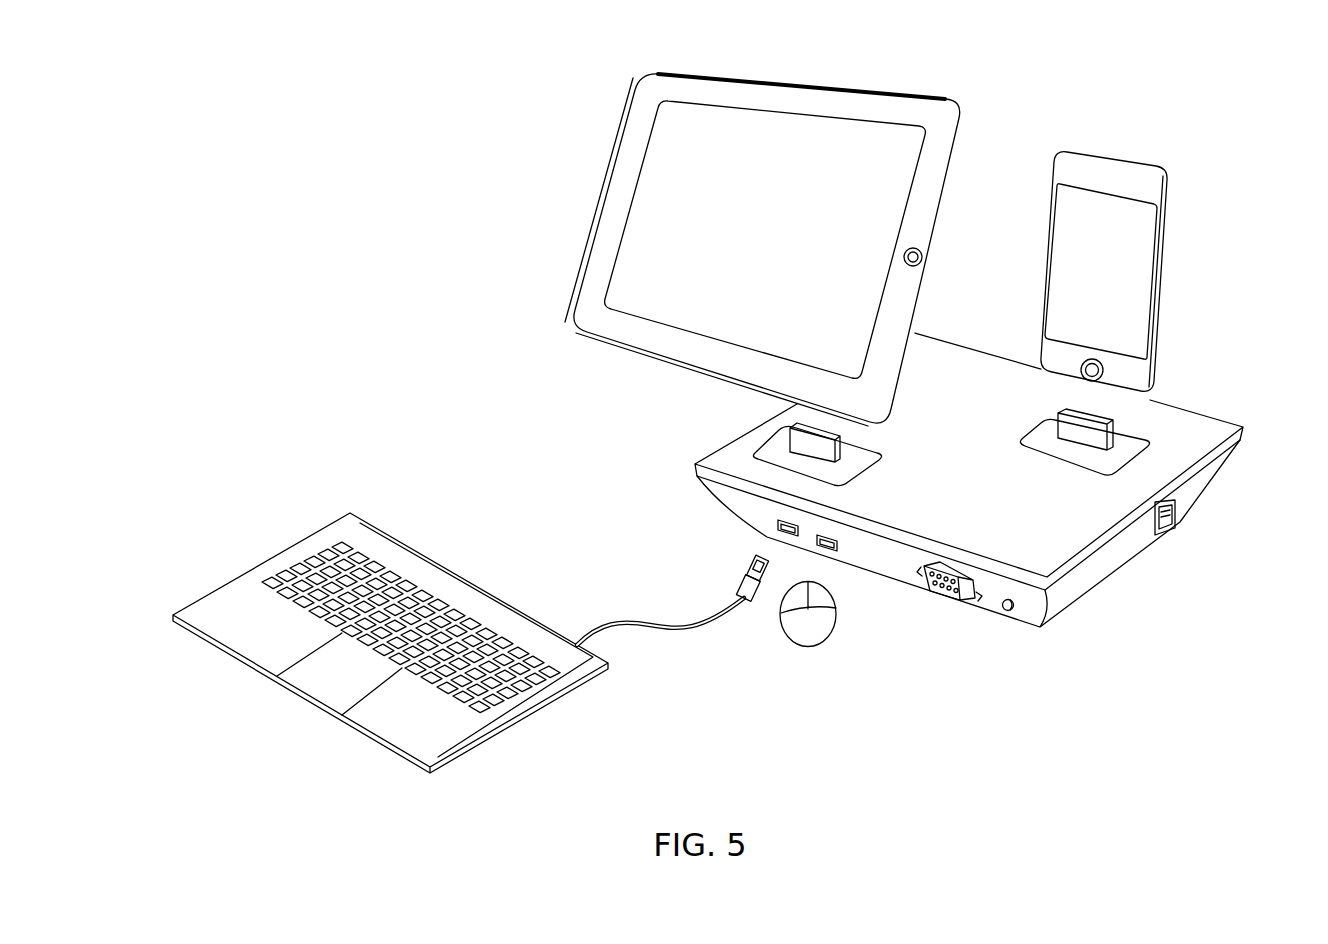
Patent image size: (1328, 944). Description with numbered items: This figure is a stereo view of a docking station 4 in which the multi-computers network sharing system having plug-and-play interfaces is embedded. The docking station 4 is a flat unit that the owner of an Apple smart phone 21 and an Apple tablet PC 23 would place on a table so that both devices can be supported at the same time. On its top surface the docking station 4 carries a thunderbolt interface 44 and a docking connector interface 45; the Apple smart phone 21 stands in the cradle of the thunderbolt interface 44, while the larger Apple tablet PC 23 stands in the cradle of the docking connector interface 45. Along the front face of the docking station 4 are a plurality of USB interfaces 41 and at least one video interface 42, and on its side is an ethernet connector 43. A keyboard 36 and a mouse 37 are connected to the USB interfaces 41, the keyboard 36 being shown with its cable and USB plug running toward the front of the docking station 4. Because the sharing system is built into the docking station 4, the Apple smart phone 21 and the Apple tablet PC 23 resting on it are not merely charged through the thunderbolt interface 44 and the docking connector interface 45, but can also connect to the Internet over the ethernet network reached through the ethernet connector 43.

The docking station 4 is at (1102, 591).
The Apple smart phone 21 is at (1086, 295).
The Apple tablet PC 23 is at (776, 247).
The keyboard 36 is at (361, 690).
The mouse 37 is at (806, 645).
The USB interfaces 41 is at (827, 540).
The video interface 42 is at (940, 594).
The ethernet connector 43 is at (1180, 507).
The thunderbolt interface 44 is at (1097, 436).
The docking connector interface 45 is at (807, 446).